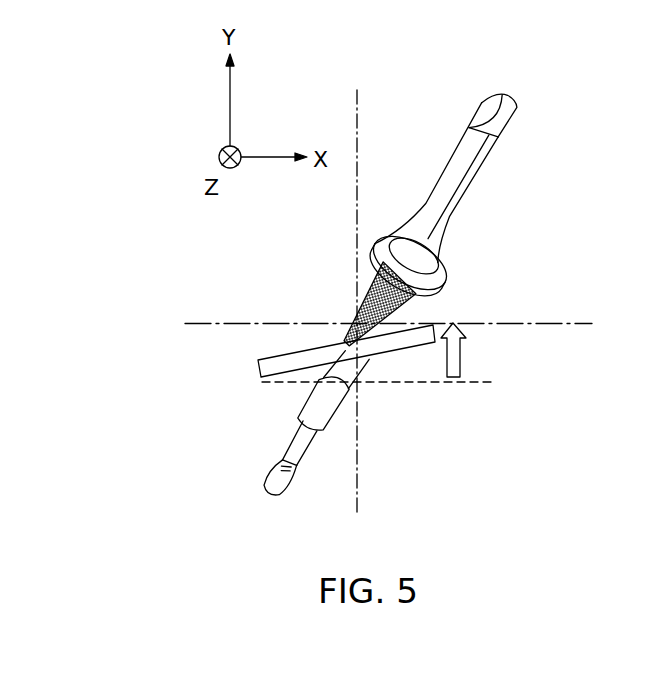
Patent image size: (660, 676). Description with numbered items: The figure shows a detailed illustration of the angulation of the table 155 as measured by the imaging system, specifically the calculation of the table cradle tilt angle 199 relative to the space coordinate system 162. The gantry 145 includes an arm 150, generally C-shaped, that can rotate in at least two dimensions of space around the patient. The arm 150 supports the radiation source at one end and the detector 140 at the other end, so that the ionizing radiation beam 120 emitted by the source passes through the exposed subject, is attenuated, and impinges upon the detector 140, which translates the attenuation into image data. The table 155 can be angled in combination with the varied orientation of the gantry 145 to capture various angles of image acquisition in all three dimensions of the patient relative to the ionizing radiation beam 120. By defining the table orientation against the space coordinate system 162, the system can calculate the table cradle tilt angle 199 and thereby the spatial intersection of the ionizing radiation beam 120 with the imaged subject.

The gantry 145 is at (540, 80).
The arm 150 is at (475, 177).
The detector 140 is at (453, 270).
The ionizing radiation beam 120 is at (370, 293).
The table 155 is at (258, 362).
The space coordinate system 162 is at (575, 323).
The table cradle tilt angle 199 is at (460, 355).